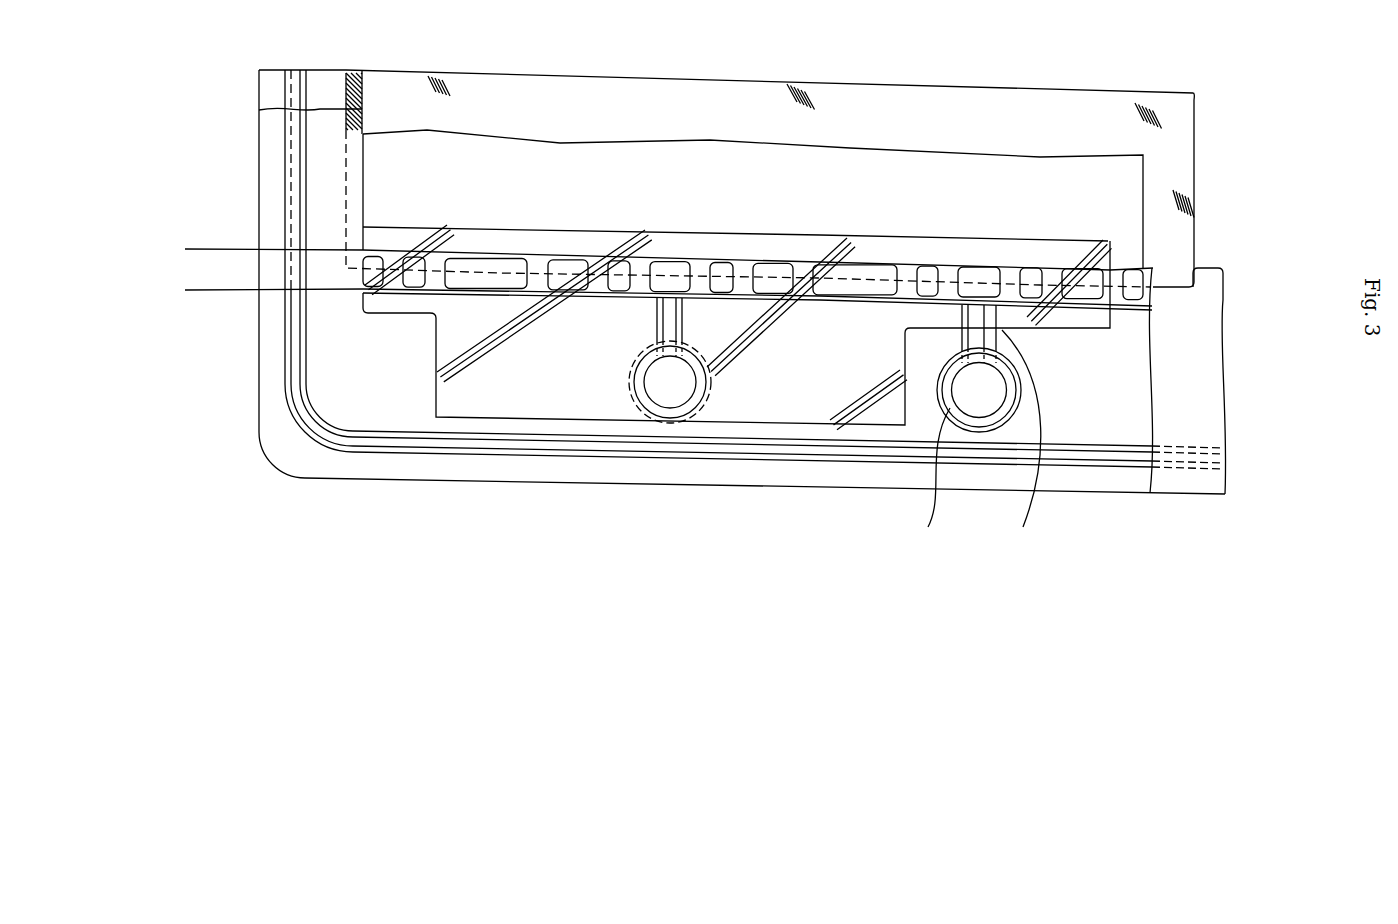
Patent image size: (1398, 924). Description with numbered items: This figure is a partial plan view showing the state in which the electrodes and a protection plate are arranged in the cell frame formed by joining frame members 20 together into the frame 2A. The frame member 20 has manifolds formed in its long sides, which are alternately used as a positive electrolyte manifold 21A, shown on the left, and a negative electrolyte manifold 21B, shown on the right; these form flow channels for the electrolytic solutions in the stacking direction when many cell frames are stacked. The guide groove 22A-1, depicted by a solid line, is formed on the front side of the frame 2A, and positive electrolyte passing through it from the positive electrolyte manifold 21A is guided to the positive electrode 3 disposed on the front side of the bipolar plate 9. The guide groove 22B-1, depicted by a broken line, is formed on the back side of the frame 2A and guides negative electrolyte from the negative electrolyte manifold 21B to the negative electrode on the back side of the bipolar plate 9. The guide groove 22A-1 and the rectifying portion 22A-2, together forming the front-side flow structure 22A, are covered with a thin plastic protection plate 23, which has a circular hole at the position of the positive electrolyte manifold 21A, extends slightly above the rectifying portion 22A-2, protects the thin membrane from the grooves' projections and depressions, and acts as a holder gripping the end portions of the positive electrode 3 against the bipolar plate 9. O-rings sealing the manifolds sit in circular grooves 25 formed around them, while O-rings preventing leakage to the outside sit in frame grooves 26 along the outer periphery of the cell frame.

The bipolar plate 9 is at (1175, 146).
The positive electrode 3 is at (1130, 251).
The guide groove and rectifying portion assembly 22A is at (589, 253).
The rectifying portion 22A-2 is at (203, 226).
The guide groove 22A-1 is at (653, 305).
The protection plate 23 is at (437, 358).
The frame grooves 26 is at (537, 454).
The positive electrolyte manifold 21A is at (643, 419).
The negative electrolyte manifold 21B is at (978, 414).
The circular grooves 25 is at (931, 484).
The guide groove 22B-1 is at (1033, 443).
The frame member 20 is at (1130, 482).
The frame 2A is at (1205, 606).